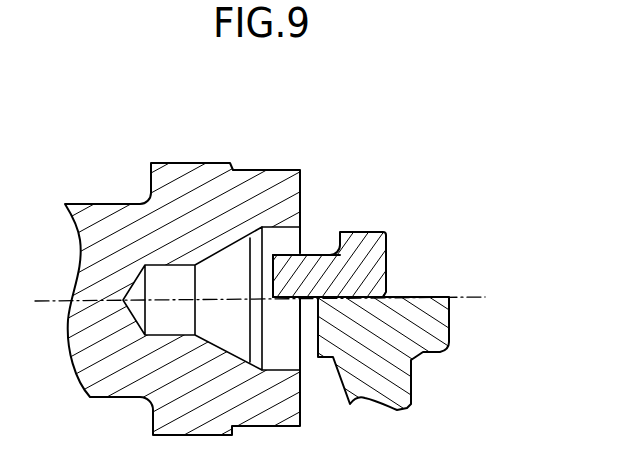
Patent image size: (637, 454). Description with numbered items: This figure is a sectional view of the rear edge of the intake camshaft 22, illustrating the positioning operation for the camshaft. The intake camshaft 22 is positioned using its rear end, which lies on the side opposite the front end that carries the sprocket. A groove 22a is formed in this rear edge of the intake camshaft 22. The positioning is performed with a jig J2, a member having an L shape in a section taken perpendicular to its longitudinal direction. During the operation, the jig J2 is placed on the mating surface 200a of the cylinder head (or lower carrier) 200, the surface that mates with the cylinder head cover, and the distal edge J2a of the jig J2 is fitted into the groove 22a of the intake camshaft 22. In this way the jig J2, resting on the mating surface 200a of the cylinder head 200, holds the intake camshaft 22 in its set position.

The intake camshaft 22 is at (163, 186).
The groove 22a is at (298, 252).
The jig J2 is at (370, 228).
The distal edge J2a is at (313, 250).
The cylinder head 200 is at (410, 332).
The mating surface 200a is at (447, 297).